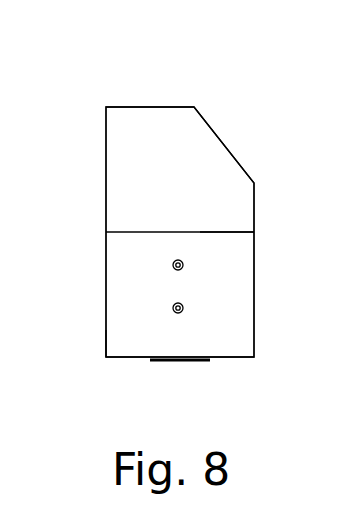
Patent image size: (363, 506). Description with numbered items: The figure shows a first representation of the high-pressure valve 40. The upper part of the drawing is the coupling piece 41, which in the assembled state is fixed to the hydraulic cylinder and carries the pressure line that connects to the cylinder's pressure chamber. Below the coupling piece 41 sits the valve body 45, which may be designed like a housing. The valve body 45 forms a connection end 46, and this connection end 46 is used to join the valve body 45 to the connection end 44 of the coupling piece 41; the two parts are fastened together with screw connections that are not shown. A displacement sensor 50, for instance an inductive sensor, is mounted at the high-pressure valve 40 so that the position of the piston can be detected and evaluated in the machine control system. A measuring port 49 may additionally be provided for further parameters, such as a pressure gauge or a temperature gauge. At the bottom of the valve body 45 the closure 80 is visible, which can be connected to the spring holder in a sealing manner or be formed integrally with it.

The high-pressure valve 40 is at (158, 94).
The coupling piece 41 is at (125, 172).
The connection end 44 is at (131, 237).
The valve body 45 is at (232, 324).
The connection end 46 is at (213, 231).
The measuring port 49 is at (106, 353).
The displacement sensor 50 is at (172, 268).
The closure 80 is at (183, 362).